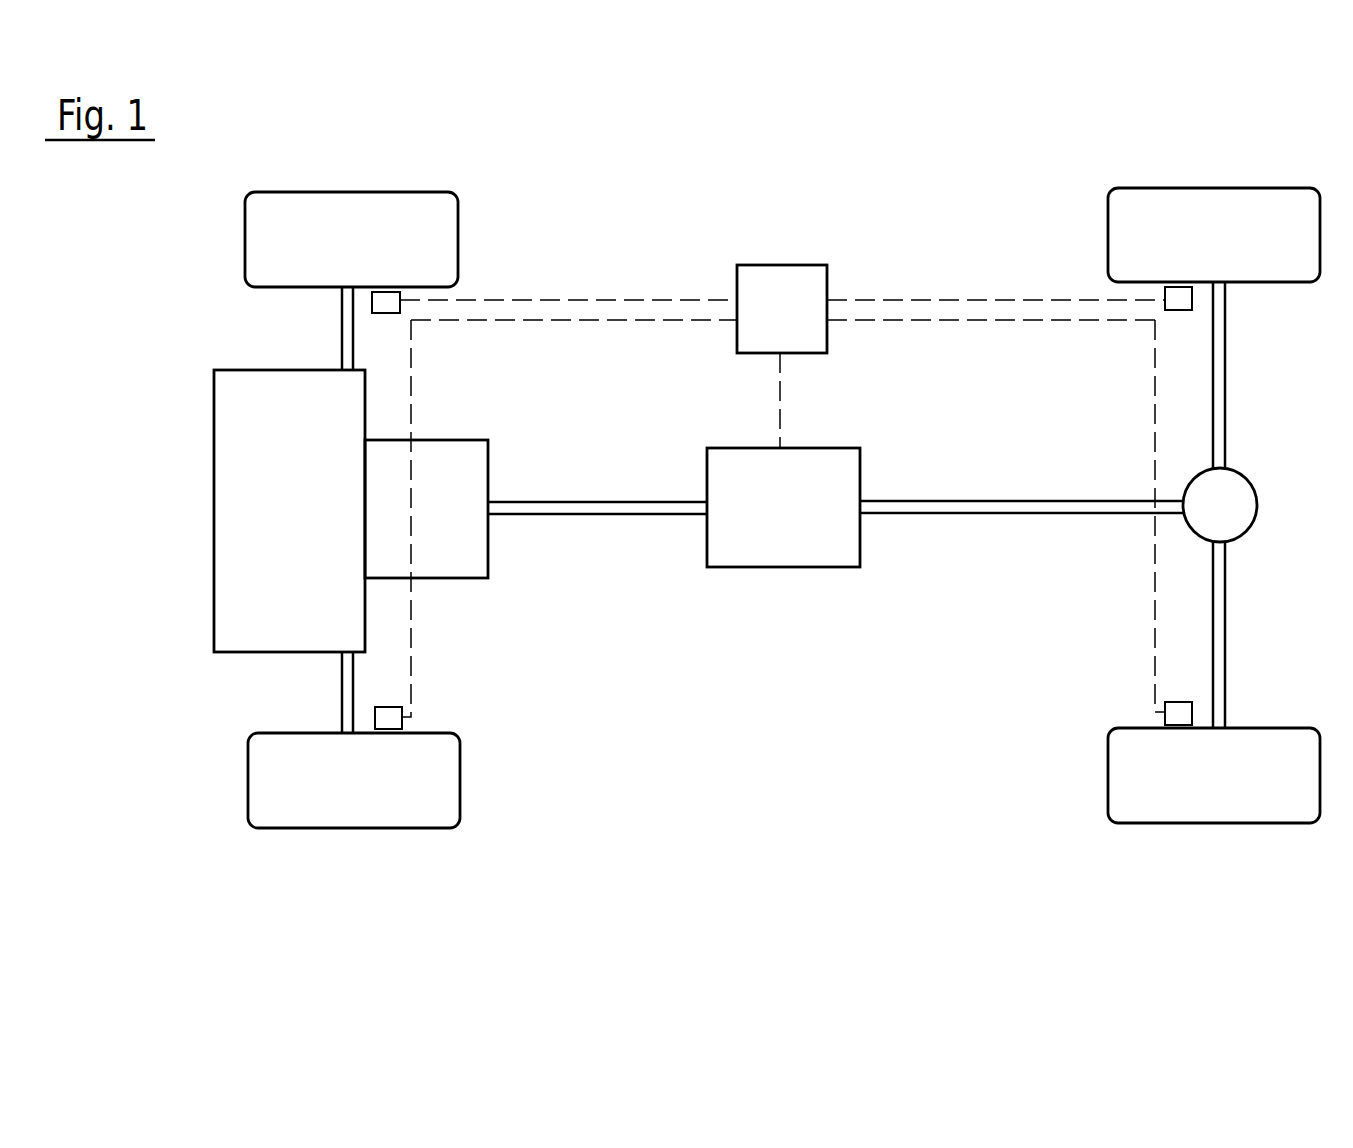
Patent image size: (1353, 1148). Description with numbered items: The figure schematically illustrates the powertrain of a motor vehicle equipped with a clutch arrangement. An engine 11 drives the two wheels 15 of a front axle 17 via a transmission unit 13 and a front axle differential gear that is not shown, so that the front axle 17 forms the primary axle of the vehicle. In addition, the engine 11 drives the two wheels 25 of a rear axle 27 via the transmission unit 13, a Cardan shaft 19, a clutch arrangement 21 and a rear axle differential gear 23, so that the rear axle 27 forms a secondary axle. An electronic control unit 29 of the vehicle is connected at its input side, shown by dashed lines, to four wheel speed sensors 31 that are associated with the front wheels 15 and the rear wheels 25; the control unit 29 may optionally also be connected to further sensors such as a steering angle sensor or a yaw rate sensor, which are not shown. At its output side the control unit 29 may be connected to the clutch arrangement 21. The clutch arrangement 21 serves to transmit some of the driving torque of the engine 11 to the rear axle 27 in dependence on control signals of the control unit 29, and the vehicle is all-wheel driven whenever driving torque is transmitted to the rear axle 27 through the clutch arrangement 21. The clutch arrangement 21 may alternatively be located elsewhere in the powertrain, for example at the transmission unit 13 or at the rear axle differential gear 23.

The engine 11 is at (264, 527).
The transmission unit 13 is at (430, 527).
The wheels 15 is at (347, 212).
The front axle 17 is at (341, 690).
The Cardan shaft 19 is at (595, 518).
The clutch arrangement 21 is at (762, 527).
The rear axle differential gear 23 is at (1232, 495).
The wheels 25 is at (1173, 210).
The rear axle 27 is at (1227, 657).
The electronic control unit 29 is at (764, 327).
The wheel speed sensors 31 is at (385, 300).